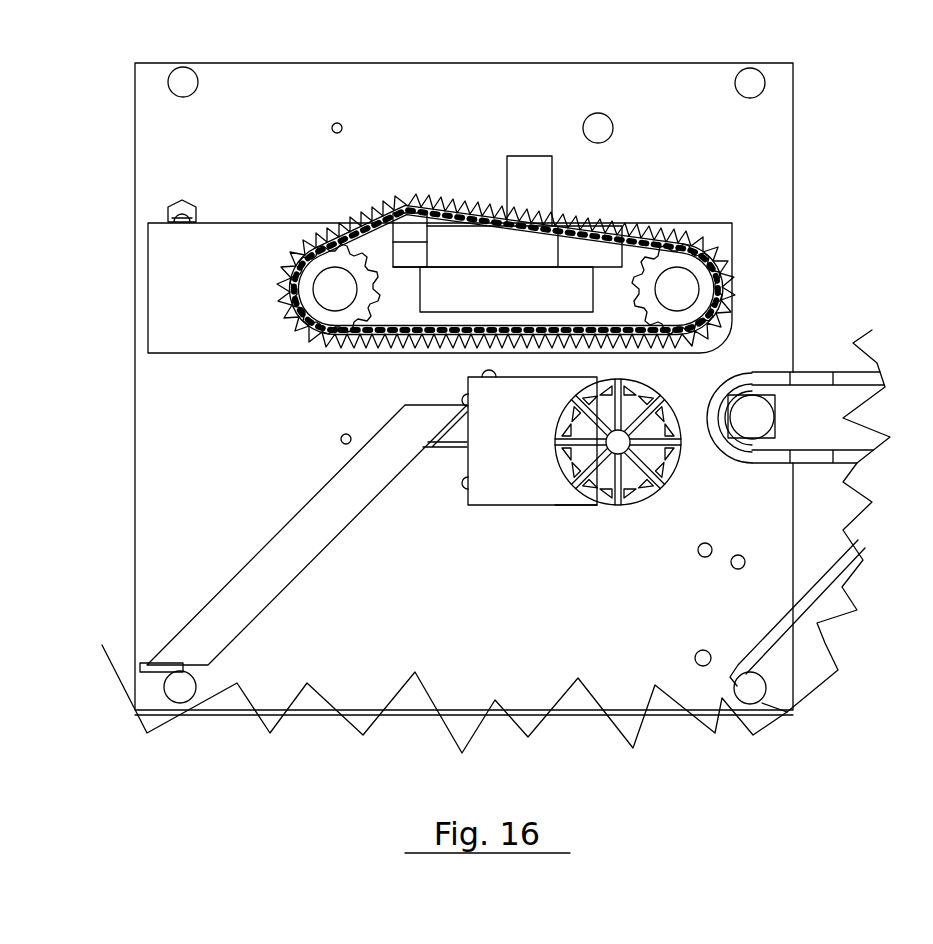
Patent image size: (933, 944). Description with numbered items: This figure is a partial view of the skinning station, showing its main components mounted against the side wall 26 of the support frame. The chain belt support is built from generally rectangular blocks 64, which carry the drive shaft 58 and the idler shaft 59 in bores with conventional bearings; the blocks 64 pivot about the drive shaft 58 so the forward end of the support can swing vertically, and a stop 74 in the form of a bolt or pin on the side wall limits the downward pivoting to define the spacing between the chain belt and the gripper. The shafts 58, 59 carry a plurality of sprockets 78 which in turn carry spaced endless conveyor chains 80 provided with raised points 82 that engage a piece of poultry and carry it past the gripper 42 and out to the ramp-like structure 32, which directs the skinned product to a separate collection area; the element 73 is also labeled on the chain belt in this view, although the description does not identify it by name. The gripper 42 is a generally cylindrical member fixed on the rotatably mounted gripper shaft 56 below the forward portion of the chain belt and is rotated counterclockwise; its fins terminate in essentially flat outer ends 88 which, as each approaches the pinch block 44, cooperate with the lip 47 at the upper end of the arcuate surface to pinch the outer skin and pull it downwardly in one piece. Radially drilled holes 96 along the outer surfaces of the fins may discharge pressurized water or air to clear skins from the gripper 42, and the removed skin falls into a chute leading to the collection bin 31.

The side wall 26 is at (793, 130).
The bin 31 is at (805, 372).
The ramp-like structure 32 is at (358, 517).
The gripper 42 is at (663, 483).
The pinch block 44 is at (535, 508).
The lip 47 is at (597, 378).
The gripper shaft 56 is at (593, 507).
The drive shaft 58 is at (322, 288).
The idler shaft 59 is at (700, 278).
The block 64 is at (243, 222).
The conveyor chain 73 is at (410, 222).
The stop 74 is at (185, 204).
The sprocket 78 is at (293, 318).
The endless conveyor chain 80 is at (368, 215).
The raised points 82 is at (447, 205).
The flat surface 88 is at (617, 507).
The radially drilled holes 96 is at (563, 420).